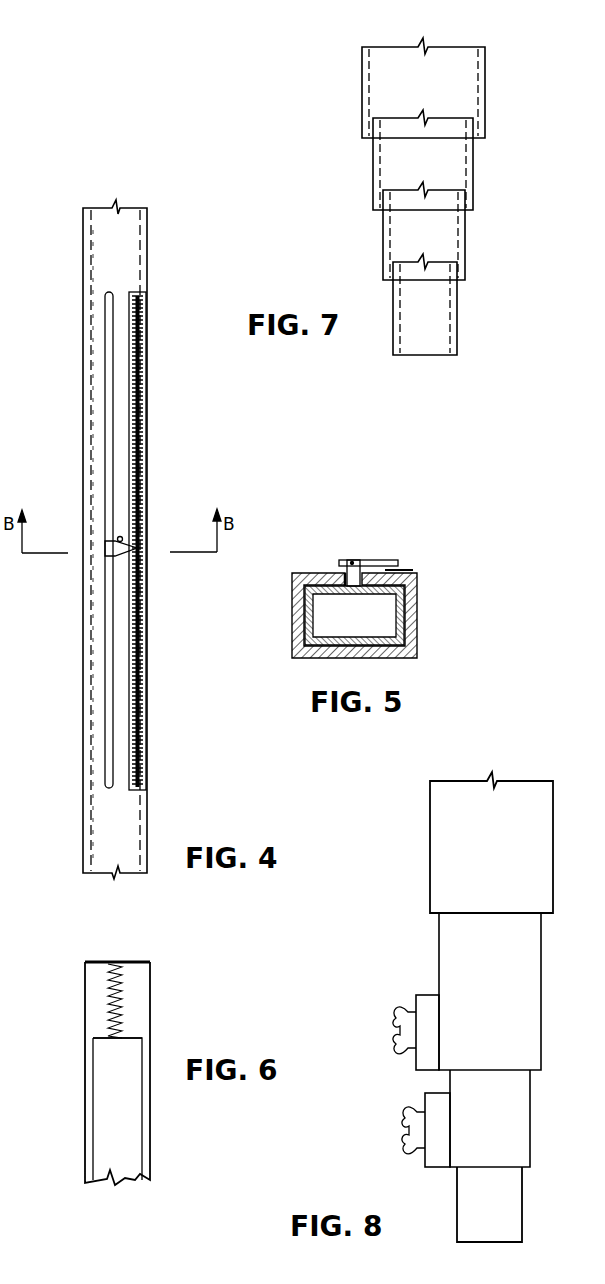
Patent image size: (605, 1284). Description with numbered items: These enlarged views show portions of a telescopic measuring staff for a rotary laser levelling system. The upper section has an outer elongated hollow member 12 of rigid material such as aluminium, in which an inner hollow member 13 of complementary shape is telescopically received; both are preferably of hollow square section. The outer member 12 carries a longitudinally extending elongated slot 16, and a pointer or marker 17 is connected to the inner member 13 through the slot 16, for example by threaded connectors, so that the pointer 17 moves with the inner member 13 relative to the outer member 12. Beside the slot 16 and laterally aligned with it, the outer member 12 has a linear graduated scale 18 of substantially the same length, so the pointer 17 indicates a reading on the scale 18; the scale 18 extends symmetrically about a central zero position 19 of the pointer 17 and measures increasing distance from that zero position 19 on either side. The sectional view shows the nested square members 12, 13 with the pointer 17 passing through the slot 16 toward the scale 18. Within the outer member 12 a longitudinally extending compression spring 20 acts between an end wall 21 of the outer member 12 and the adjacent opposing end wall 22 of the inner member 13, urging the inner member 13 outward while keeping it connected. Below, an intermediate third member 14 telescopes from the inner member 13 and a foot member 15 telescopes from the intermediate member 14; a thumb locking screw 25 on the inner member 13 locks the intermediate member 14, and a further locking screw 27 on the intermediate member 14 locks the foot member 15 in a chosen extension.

In FIG. 4, the outer elongated hollow member 12 is at (83, 405).
In FIG. 7, the outer elongated hollow member 12 is at (485, 90).
In FIG. 5, the outer elongated hollow member 12 is at (416, 640).
In FIG. 6, the outer elongated hollow member 12 is at (150, 1118).
In FIG. 8, the outer elongated hollow member 12 is at (546, 847).
In FIG. 4, the inner hollow member 13 is at (125, 247).
In FIG. 7, the inner hollow member 13 is at (473, 172).
In FIG. 5, the inner hollow member 13 is at (305, 620).
In FIG. 6, the inner hollow member 13 is at (100, 1118).
In FIG. 8, the inner hollow member 13 is at (530, 993).
In FIG. 7, the intermediate third member 14 is at (465, 243).
In FIG. 8, the intermediate third member 14 is at (522, 1143).
In FIG. 7, the foot member 15 is at (457, 318).
In FIG. 8, the foot member 15 is at (512, 1212).
In FIG. 4, the elongated slot 16 is at (105, 700).
In FIG. 5, the elongated slot 16 is at (345, 574).
In FIG. 4, the pointer 17 is at (105, 548).
In FIG. 5, the pointer 17 is at (377, 560).
In FIG. 4, the linear graduated scale 18 is at (157, 438).
In FIG. 5, the linear graduated scale 18 is at (413, 570).
In FIG. 4, the zero position 19 is at (158, 538).
In FIG. 6, the compression spring 20 is at (127, 987).
In FIG. 6, the end wall of the outer member 21 is at (103, 960).
In FIG. 6, the end wall of the inner member 22 is at (130, 1038).
In FIG. 8, the locking screw 25 is at (380, 1007).
In FIG. 8, the locking screw 27 is at (390, 1133).